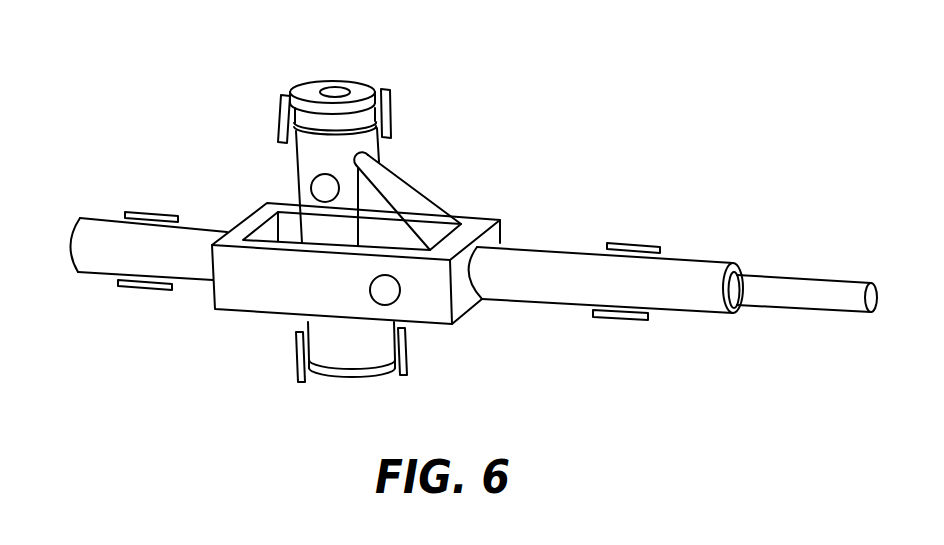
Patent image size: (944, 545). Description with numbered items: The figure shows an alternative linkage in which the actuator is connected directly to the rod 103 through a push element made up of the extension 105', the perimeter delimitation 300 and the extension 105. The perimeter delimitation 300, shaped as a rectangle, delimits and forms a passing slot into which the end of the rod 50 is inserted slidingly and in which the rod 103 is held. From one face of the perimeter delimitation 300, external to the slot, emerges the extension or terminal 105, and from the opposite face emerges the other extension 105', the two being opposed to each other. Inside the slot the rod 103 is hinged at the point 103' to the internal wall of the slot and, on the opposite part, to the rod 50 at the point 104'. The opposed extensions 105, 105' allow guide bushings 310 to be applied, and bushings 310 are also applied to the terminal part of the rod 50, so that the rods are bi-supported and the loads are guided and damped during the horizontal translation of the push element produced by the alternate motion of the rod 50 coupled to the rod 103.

The rod 50 is at (308, 92).
The perimeter delimitation 300 is at (276, 292).
The rod 103 is at (412, 192).
The hinge point 104' is at (273, 168).
The hinge point 103' is at (430, 325).
The extension 105 is at (673, 247).
The extension 105' is at (148, 280).
The bushing 310 is at (391, 113).